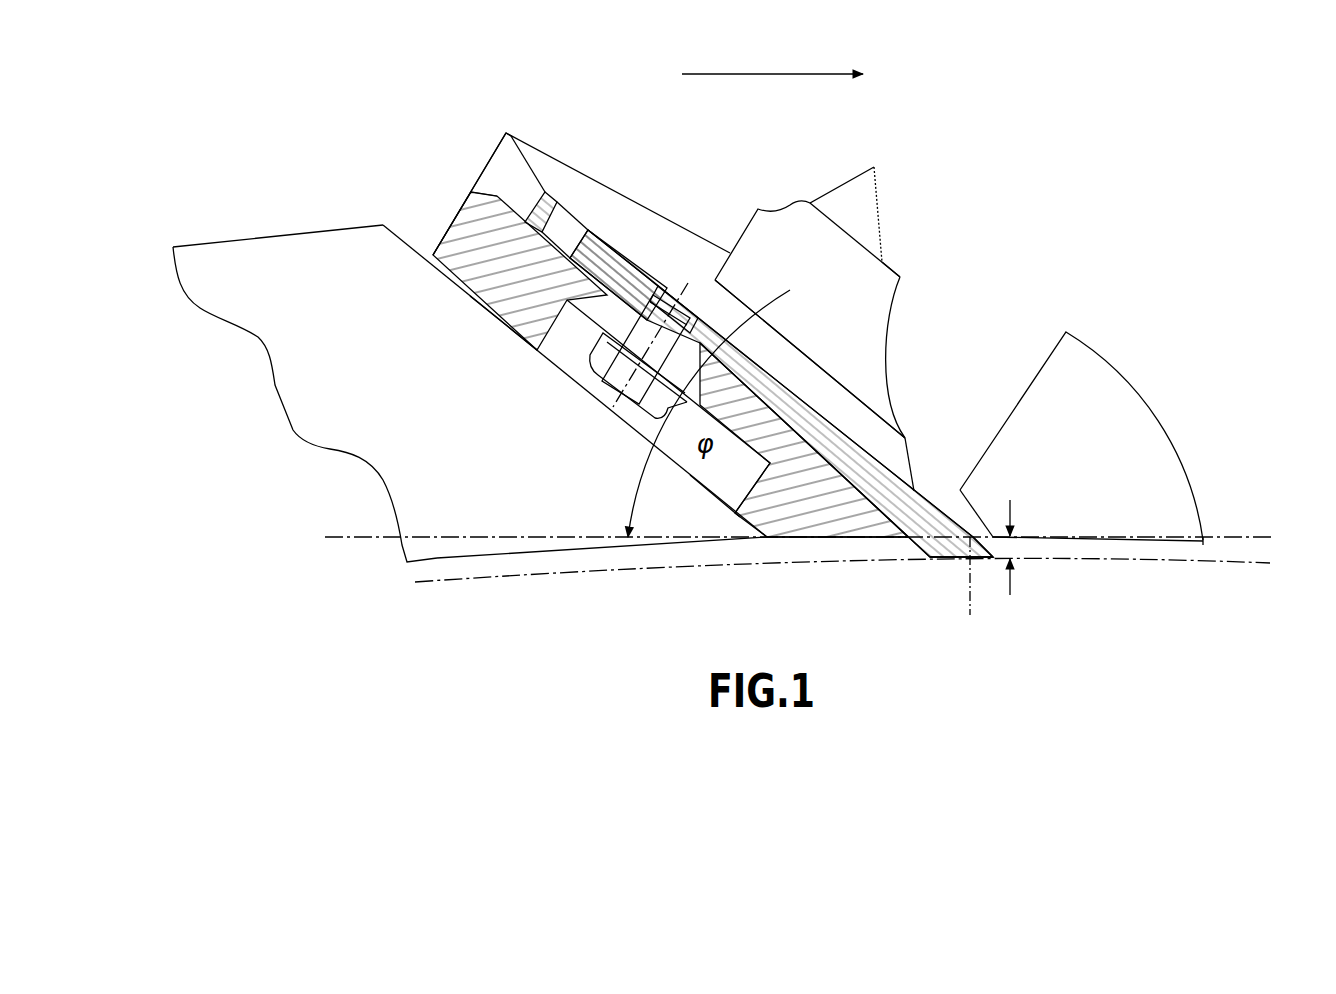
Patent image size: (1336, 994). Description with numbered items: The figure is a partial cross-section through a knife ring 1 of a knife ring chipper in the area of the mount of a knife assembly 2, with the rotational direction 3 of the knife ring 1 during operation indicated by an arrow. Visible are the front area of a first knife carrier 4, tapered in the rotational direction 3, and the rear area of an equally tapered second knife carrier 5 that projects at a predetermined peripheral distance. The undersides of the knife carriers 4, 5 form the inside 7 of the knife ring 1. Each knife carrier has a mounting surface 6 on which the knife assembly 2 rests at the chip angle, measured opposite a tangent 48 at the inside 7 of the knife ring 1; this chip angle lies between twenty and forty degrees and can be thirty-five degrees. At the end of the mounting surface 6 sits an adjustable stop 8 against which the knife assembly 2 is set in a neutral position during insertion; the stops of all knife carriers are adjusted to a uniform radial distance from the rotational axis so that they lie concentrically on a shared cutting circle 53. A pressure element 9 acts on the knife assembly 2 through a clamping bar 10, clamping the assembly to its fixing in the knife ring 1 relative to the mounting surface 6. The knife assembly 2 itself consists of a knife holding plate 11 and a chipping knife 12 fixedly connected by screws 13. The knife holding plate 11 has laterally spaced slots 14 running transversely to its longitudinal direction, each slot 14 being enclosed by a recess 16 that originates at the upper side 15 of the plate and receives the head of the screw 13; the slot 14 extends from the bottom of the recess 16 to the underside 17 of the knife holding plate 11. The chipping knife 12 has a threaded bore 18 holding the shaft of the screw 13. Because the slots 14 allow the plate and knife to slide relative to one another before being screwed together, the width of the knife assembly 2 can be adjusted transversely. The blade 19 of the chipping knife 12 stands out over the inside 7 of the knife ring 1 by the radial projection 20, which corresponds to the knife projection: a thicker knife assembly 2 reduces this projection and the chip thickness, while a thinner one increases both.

The knife ring 1 is at (1032, 157).
The knife assembly 2 is at (573, 188).
The rotational direction 3 is at (755, 75).
The first knife carrier 4 is at (272, 377).
The second knife carrier 5 is at (1123, 380).
The mounting surface 6 is at (575, 352).
The inside of the knife ring 7 is at (433, 563).
The adjustable stop 8 is at (437, 245).
The pressure element 9 is at (890, 300).
The clamping bar 10 is at (913, 450).
The knife holding plate 11 is at (478, 311).
The chipping knife 12 is at (627, 247).
The screw 13 is at (617, 383).
The slot 14 is at (757, 428).
The upper side of the knife holding plate 15 is at (508, 330).
The recess 16 is at (710, 523).
The underside of the knife holding plate 17 is at (495, 198).
The threaded bore 18 is at (667, 290).
The blade 19 is at (993, 563).
The radial projection 20 is at (1012, 547).
The tangent 48 is at (1260, 537).
The cutting circle 53 is at (568, 572).